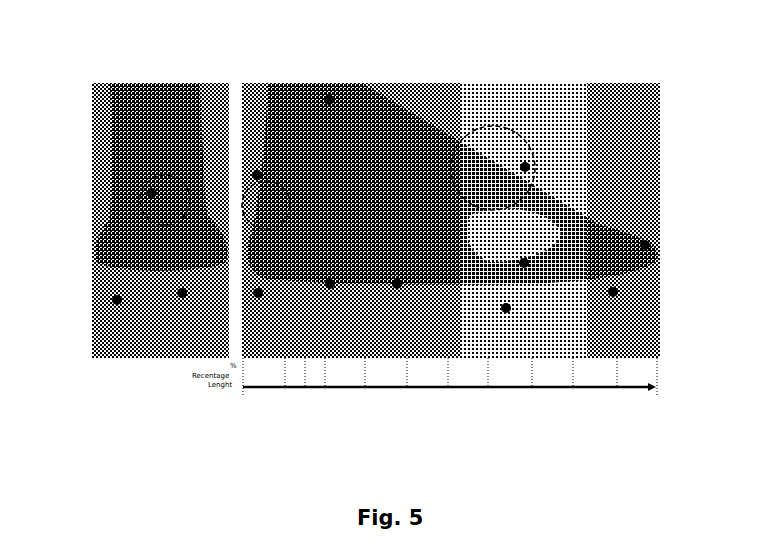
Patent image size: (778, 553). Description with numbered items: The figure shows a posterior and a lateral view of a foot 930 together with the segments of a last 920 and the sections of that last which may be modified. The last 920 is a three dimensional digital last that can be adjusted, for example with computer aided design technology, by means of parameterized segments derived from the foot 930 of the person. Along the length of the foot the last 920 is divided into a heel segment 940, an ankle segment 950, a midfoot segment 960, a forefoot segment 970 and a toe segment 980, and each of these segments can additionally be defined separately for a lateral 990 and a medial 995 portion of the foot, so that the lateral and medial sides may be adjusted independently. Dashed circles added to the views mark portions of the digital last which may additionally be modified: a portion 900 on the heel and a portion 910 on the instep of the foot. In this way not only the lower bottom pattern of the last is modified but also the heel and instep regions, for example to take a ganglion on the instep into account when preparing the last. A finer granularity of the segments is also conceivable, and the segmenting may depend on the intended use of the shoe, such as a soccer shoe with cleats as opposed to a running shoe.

The portion on the heel 900 is at (257, 175).
The portion on the instep 910 is at (525, 167).
The last 920 is at (645, 245).
The foot 930 is at (329, 100).
The heel segment 940 is at (258, 293).
The ankle segment 950 is at (330, 284).
The midfoot segment 960 is at (397, 284).
The forefoot segment 970 is at (506, 308).
The toe segment 980 is at (613, 292).
The lateral portion 990 is at (182, 293).
The medial portion 995 is at (117, 300).